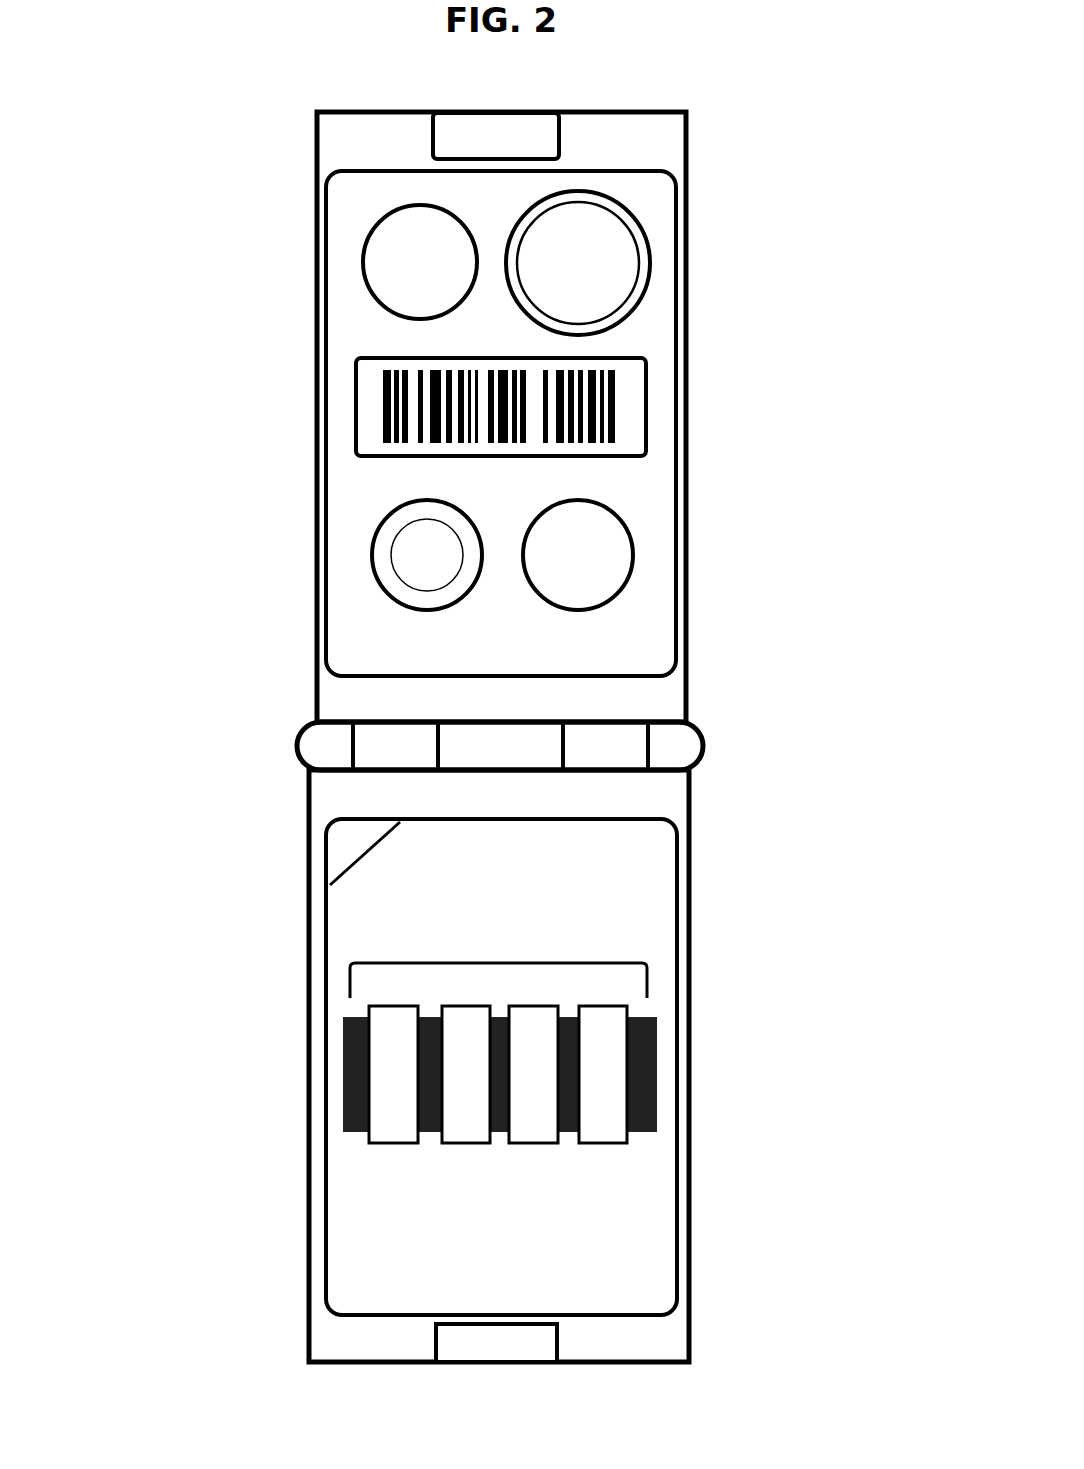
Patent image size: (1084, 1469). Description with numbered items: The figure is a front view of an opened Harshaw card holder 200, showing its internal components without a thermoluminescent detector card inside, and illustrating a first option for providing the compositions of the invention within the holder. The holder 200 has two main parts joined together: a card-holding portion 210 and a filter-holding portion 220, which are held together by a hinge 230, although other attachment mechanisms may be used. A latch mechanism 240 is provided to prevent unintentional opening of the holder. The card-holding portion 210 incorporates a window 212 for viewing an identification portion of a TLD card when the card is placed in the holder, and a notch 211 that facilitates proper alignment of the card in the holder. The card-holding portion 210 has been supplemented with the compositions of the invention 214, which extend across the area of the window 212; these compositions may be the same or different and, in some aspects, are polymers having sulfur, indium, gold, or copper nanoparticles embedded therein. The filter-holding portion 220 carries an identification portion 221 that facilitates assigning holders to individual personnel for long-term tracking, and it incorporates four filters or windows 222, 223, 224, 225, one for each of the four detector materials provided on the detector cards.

The holder 200 is at (808, 1240).
The card-holding portion 210 is at (302, 1325).
The notch 211 is at (356, 844).
The window 212 is at (660, 1093).
The compositions of the invention 214 is at (499, 958).
The filter-holding portion 220 is at (303, 407).
The identification portion 221 is at (655, 400).
The filter 222 is at (362, 226).
The filter 223 is at (652, 227).
The filter 224 is at (370, 513).
The filter 225 is at (628, 510).
The hinge 230 is at (708, 745).
The latch mechanism 240 is at (567, 140).